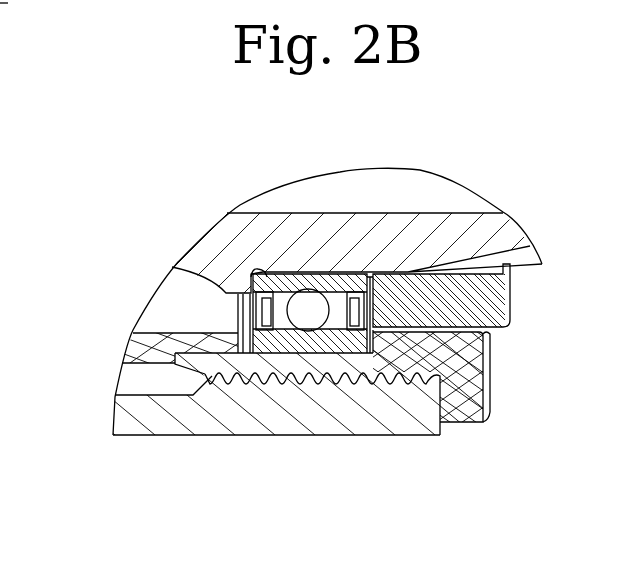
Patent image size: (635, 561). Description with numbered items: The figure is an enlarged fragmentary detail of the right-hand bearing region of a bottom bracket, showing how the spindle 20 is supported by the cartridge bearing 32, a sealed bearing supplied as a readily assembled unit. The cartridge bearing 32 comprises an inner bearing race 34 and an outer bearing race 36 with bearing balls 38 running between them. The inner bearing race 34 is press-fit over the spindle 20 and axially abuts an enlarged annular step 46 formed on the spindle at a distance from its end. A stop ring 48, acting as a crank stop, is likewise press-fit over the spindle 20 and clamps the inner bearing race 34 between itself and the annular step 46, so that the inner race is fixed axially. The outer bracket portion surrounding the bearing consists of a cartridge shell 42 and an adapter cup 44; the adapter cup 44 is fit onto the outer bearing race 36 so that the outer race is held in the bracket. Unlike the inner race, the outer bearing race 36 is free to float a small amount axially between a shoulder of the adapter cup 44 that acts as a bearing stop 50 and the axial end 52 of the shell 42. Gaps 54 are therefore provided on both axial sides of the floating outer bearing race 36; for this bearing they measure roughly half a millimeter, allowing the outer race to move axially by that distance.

The spindle 20 is at (240, 232).
The cartridge bearing 32 is at (297, 356).
The inner bearing race 34 is at (342, 286).
The outer bearing race 36 is at (325, 336).
The bearing balls 38 is at (310, 307).
The cartridge shell 42 is at (158, 345).
The adapter cup 44 is at (465, 375).
The annular step 46 is at (238, 284).
The stop ring 48 is at (497, 300).
The bearing stop 50 is at (470, 337).
The axial end 52 is at (198, 306).
The gap 54 is at (246, 346).